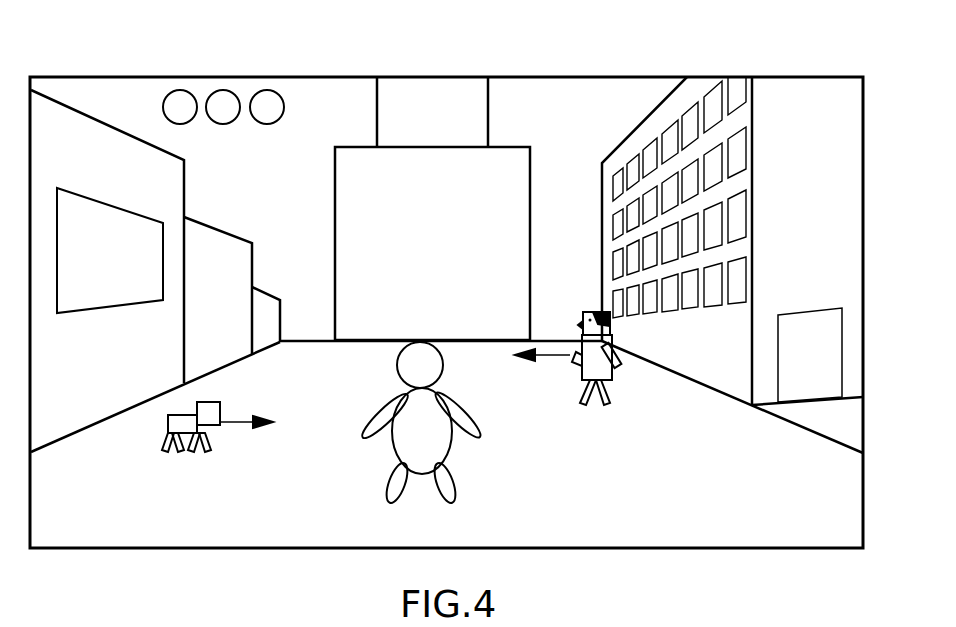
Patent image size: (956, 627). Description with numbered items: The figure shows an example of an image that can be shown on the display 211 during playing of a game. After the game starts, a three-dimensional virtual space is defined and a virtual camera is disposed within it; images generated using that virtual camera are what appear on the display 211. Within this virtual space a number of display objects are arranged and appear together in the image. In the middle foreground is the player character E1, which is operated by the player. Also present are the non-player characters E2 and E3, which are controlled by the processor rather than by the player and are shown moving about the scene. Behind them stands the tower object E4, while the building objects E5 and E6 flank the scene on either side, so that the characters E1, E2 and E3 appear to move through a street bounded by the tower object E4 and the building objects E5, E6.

The display 211 is at (648, 76).
The player character E1 is at (477, 427).
The non-player character E2 is at (591, 311).
The non-player character E3 is at (208, 402).
The tower object E4 is at (510, 146).
The building object E5 is at (177, 203).
The building object E6 is at (637, 129).